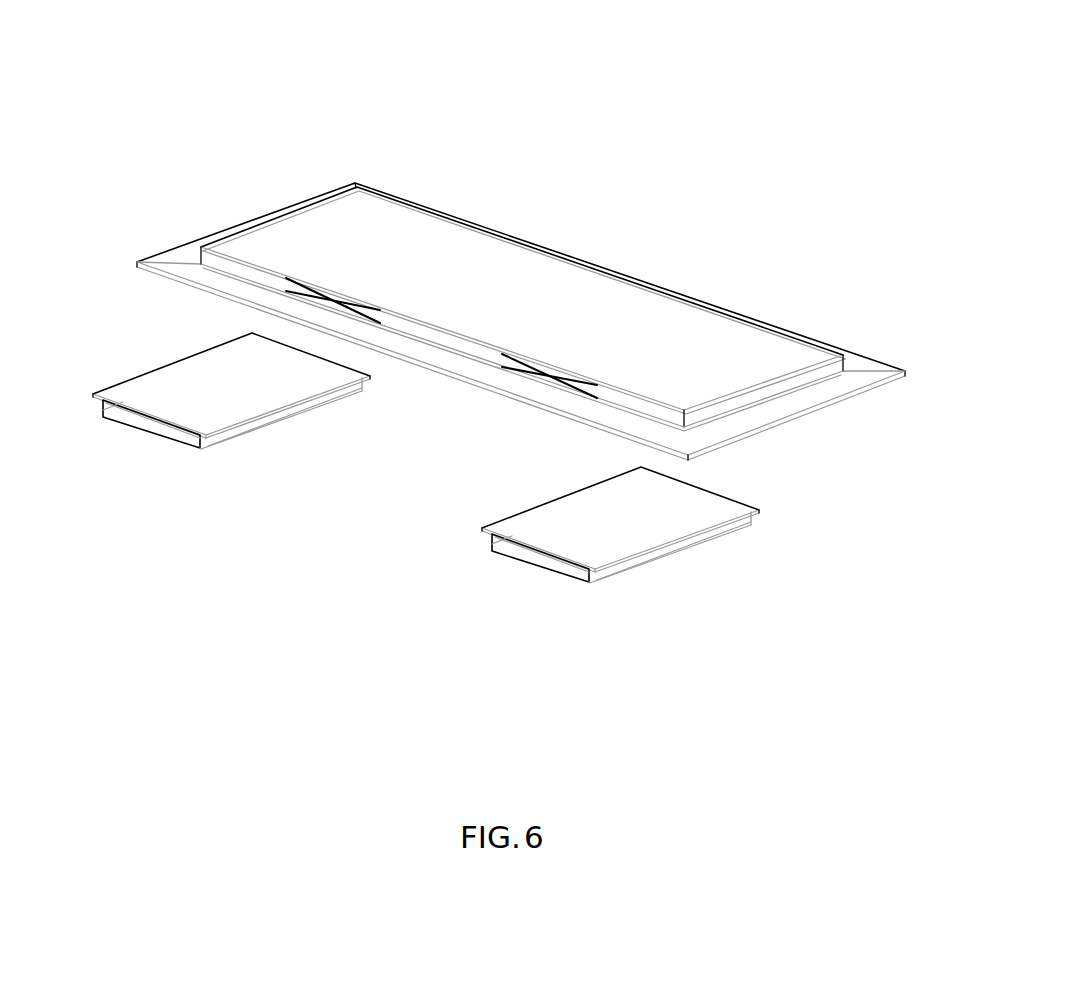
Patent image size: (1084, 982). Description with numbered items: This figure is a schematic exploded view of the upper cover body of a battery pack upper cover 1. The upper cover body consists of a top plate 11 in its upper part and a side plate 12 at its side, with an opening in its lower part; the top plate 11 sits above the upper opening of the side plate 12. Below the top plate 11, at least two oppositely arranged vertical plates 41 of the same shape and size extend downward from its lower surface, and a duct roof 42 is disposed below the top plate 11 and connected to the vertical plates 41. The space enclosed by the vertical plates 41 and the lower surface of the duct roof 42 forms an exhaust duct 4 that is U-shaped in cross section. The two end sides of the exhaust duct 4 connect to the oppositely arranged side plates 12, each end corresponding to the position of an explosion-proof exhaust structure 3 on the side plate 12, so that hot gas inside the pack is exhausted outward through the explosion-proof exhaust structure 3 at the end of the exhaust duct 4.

The upper cover 1 is at (697, 108).
The top plate 11 is at (435, 290).
The side plate 12 is at (247, 273).
The explosion-proof exhaust structure 3 is at (333, 300).
The exhaust duct 4 is at (263, 504).
The vertical plate 41 is at (262, 423).
The duct roof 42 is at (262, 382).